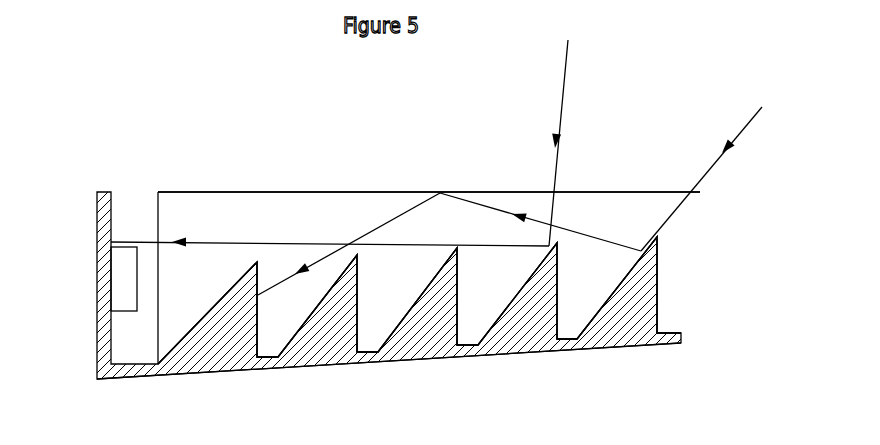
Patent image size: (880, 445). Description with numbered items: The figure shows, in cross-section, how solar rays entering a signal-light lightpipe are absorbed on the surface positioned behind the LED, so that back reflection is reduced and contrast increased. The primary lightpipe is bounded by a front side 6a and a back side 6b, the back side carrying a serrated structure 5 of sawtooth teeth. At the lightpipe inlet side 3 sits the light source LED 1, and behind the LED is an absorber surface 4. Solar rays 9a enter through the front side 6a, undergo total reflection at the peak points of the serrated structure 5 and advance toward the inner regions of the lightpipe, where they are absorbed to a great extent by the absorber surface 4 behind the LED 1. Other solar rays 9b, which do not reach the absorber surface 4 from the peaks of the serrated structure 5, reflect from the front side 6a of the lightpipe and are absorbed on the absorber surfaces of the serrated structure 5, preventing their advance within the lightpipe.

The light source LED 1 is at (128, 310).
The lightpipe inlet side 3 is at (157, 195).
The absorber surface positioned behind the LED 4 is at (110, 331).
The serrated structure 5 is at (222, 358).
The front side of the primary light pipe 6a is at (213, 191).
The back side of the primary light pipe 6b is at (430, 360).
The solar rays 9a is at (560, 100).
The solar ray 9b is at (695, 183).